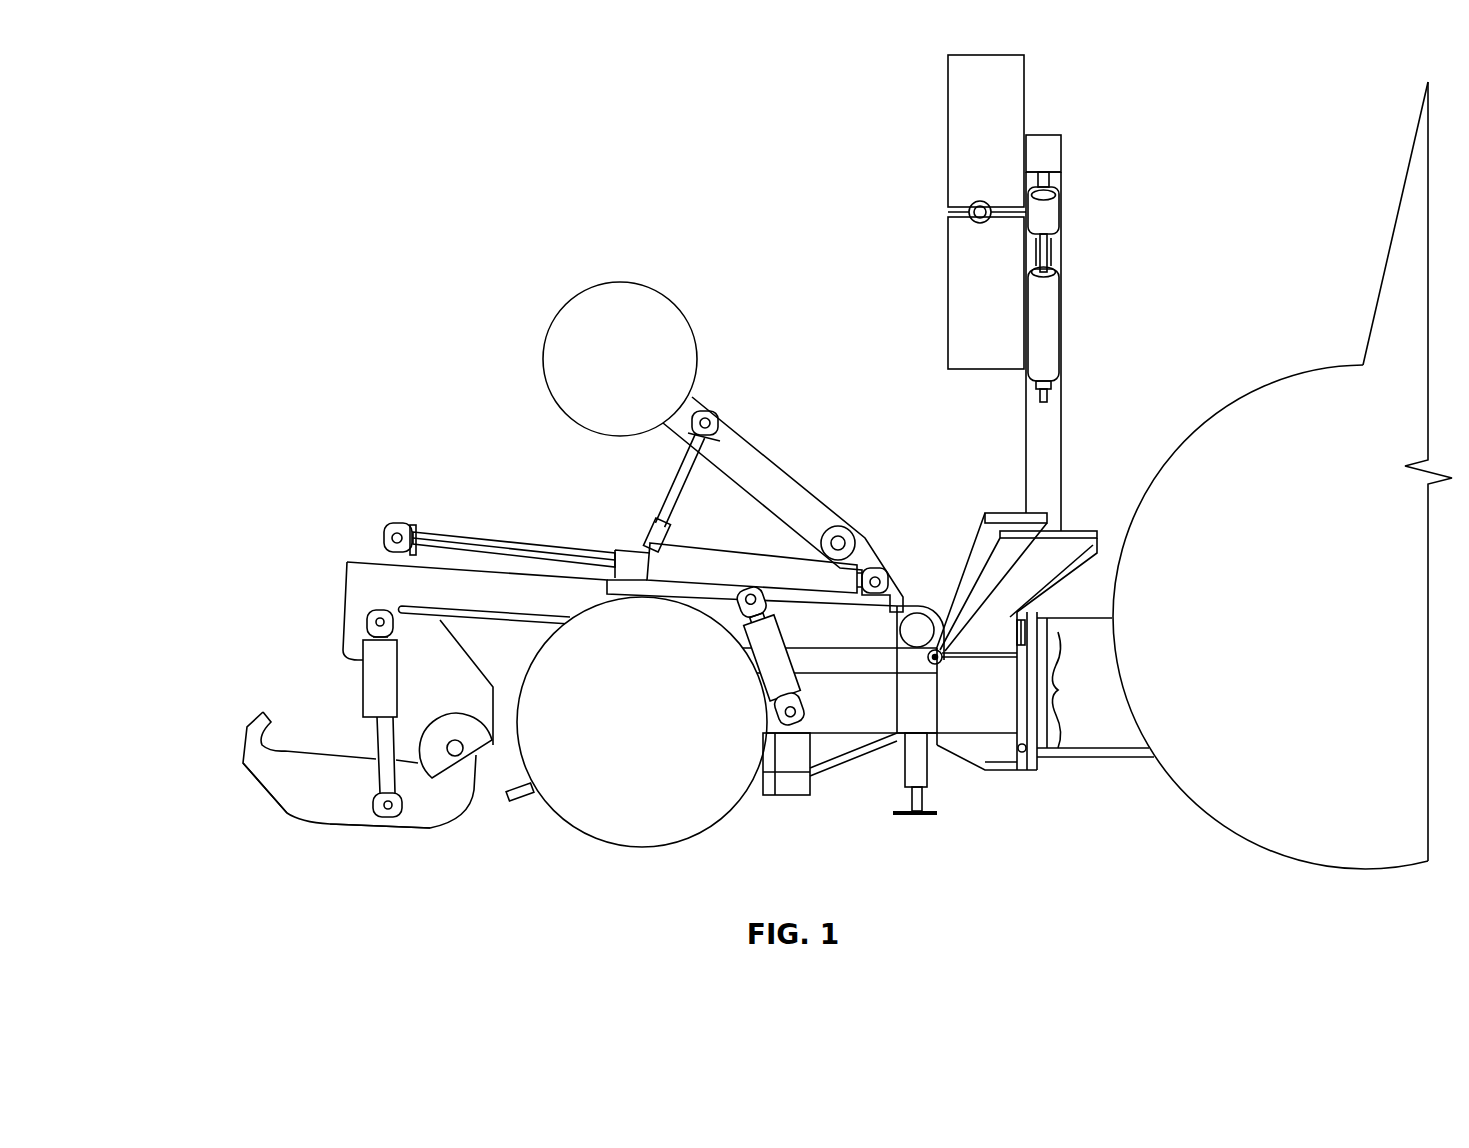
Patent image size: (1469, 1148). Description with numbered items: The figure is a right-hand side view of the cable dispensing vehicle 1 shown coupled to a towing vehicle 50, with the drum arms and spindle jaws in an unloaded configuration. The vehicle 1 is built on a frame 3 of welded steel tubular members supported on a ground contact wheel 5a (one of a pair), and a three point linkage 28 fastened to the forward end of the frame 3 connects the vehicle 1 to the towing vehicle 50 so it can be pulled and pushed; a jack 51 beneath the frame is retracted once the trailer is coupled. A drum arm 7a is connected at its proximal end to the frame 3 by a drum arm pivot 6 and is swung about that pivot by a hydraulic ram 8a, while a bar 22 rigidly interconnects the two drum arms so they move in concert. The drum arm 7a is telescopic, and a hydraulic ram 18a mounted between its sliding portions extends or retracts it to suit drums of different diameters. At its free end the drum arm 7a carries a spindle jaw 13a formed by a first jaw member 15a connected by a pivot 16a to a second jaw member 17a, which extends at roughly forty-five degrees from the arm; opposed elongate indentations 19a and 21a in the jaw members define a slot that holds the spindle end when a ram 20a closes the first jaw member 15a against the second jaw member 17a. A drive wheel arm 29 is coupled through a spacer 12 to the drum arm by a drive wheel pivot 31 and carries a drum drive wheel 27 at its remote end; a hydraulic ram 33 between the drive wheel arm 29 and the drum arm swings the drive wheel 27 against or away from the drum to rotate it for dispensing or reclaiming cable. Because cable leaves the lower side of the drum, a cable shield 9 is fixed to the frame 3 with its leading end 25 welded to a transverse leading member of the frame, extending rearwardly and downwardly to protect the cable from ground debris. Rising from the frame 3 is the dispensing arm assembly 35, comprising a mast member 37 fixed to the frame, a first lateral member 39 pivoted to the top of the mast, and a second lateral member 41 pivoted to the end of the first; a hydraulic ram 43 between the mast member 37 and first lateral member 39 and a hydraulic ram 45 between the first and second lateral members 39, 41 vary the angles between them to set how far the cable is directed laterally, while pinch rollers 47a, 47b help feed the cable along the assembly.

The cable dispensing vehicle 1 is at (459, 180).
The frame 3 is at (846, 718).
The ground contact wheel 5a is at (715, 830).
The drum arm pivot 6 is at (940, 665).
The drum arm 7a is at (518, 588).
The hydraulic ram 8a is at (765, 652).
The cable shield 9 is at (845, 771).
The spacer 12 is at (888, 562).
The spindle jaw 13a is at (204, 676).
The first jaw member 15a is at (325, 793).
The pivot 16a is at (456, 745).
The second jaw member 17a is at (468, 683).
The hydraulic ram 18a is at (704, 560).
The elongate indentation 19a is at (285, 750).
The ram 20a is at (370, 684).
The elongate indentation 21a is at (377, 733).
The bar 22 is at (918, 613).
The leading end 25 is at (897, 736).
The drum drive wheel 27 is at (632, 283).
The three point linkage 28 is at (1095, 687).
The drive wheel arm 29 is at (752, 456).
The drive wheel pivot 31 is at (840, 540).
The hydraulic ram 33 is at (646, 530).
The dispensing arm assembly 35 is at (1080, 366).
The mast member 37 is at (1026, 452).
The first lateral member 39 is at (1062, 246).
The second lateral member 41 is at (1045, 135).
The hydraulic ram 43 is at (1052, 326).
The hydraulic ram 45 is at (1060, 198).
The pinch roller 47a is at (947, 138).
The pinch roller 47b is at (947, 322).
The towing vehicle 50 is at (1303, 329).
The jack 51 is at (926, 778).